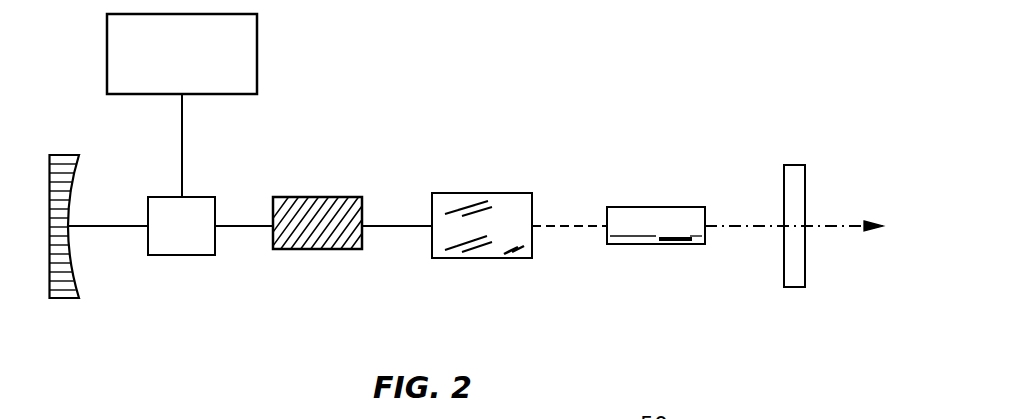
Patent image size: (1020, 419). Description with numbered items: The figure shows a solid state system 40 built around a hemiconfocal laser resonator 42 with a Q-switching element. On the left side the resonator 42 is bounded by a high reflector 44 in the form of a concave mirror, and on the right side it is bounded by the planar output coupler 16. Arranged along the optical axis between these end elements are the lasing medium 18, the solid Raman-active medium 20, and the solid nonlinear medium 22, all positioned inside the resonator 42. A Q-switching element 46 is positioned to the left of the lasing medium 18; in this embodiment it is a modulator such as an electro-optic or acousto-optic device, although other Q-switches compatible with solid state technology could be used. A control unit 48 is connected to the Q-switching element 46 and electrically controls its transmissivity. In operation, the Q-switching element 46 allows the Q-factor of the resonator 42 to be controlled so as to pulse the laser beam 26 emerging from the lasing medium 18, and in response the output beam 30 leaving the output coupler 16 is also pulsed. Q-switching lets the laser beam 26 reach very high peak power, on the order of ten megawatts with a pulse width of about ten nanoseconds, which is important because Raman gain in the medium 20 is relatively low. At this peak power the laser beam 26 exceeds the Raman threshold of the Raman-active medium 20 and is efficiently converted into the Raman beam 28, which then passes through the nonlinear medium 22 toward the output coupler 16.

The planar output coupler 16 is at (795, 165).
The lasing medium 18 is at (312, 250).
The solid Raman-active medium 20 is at (482, 193).
The solid nonlinear medium 22 is at (674, 245).
The laser beam 26 is at (393, 224).
The Raman beam 28 is at (565, 224).
The output beam 30 is at (758, 224).
The solid state system 40 is at (582, 66).
The hemiconfocal laser resonator 42 is at (522, 303).
The high reflector 44 is at (60, 299).
The Q-switching element 46 is at (204, 197).
The control unit 48 is at (257, 50).